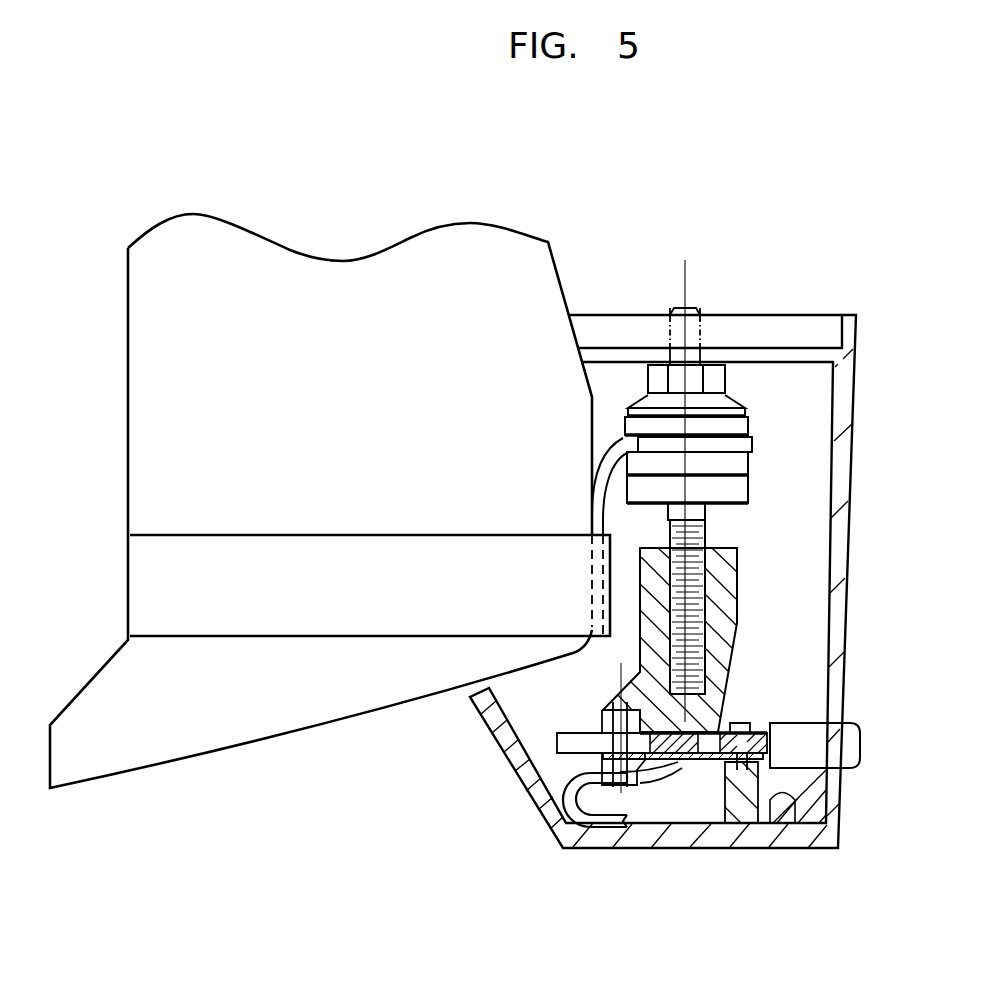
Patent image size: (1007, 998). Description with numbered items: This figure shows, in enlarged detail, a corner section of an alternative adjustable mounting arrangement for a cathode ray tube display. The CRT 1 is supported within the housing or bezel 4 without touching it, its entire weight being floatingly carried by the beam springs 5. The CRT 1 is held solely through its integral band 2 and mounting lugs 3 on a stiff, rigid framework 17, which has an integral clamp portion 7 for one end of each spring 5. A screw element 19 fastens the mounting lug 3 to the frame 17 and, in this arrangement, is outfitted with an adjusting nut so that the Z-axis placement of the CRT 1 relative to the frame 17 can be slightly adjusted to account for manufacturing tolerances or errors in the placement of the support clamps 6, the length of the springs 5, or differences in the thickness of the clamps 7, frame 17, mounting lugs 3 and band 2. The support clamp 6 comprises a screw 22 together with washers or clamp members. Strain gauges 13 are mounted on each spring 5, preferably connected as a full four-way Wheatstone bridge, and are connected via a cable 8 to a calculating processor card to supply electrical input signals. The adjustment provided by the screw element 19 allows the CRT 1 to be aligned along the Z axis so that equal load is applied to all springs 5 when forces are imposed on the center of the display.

The CRT 1 is at (338, 720).
The integral band 2 is at (172, 617).
The mounting lug 3 is at (612, 433).
The bezel 4 is at (845, 432).
The spring 5 is at (710, 767).
The clamp 6 is at (862, 745).
The mounting clamp 7 is at (603, 730).
The cable 8 is at (537, 800).
The strain gauge 13 is at (673, 767).
The framework 17 is at (738, 585).
The screw element 19 is at (712, 330).
The screw 22 is at (742, 725).